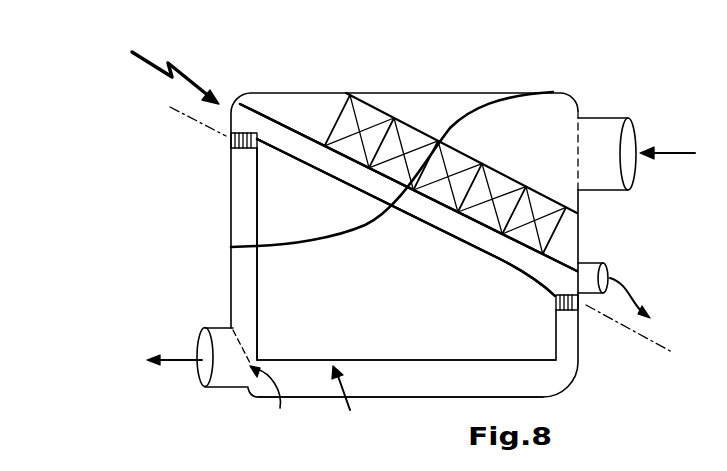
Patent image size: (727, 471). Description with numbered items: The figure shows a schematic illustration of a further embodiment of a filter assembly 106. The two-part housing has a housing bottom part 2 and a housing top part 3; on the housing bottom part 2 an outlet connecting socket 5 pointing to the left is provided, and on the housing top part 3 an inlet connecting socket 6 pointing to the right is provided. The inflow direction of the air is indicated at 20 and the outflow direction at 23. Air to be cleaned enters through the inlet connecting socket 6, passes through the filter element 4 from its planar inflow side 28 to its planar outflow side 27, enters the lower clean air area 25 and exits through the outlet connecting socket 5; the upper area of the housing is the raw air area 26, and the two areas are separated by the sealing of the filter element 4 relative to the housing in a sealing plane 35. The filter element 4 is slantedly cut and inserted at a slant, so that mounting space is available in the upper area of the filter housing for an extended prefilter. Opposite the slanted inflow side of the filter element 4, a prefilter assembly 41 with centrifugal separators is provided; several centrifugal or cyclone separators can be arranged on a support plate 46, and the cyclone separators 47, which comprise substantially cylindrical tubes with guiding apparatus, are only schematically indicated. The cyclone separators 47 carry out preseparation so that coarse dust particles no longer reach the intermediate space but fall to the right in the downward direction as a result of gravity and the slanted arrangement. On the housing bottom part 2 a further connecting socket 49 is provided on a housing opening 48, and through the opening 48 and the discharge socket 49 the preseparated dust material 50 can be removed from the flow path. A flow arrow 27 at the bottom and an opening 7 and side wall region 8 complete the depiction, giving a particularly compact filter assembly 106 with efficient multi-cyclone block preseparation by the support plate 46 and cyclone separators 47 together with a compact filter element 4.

The housing bottom part 2 is at (231, 277).
The housing top part 3 is at (275, 103).
The filter element 4 is at (273, 200).
The outlet connecting socket 5 is at (223, 375).
The inlet connecting socket 6 is at (595, 140).
The opening 7 is at (269, 401).
The side wall 8 is at (562, 136).
The inflow direction 20 is at (674, 152).
The outflow direction 23 is at (172, 363).
The clean air area 25 is at (415, 378).
The raw air area 26 is at (255, 118).
The outflow side 27 is at (346, 401).
The inflow side 28 is at (400, 226).
The sealing plane 35 is at (225, 134).
The prefilter assembly 41 is at (557, 240).
The support plate 46 is at (380, 110).
The cyclone separators 47 is at (334, 125).
The housing opening 48 is at (568, 278).
The discharge socket 49 is at (598, 265).
The preseparated dust material 50 is at (632, 297).
The filter assembly 106 is at (165, 63).